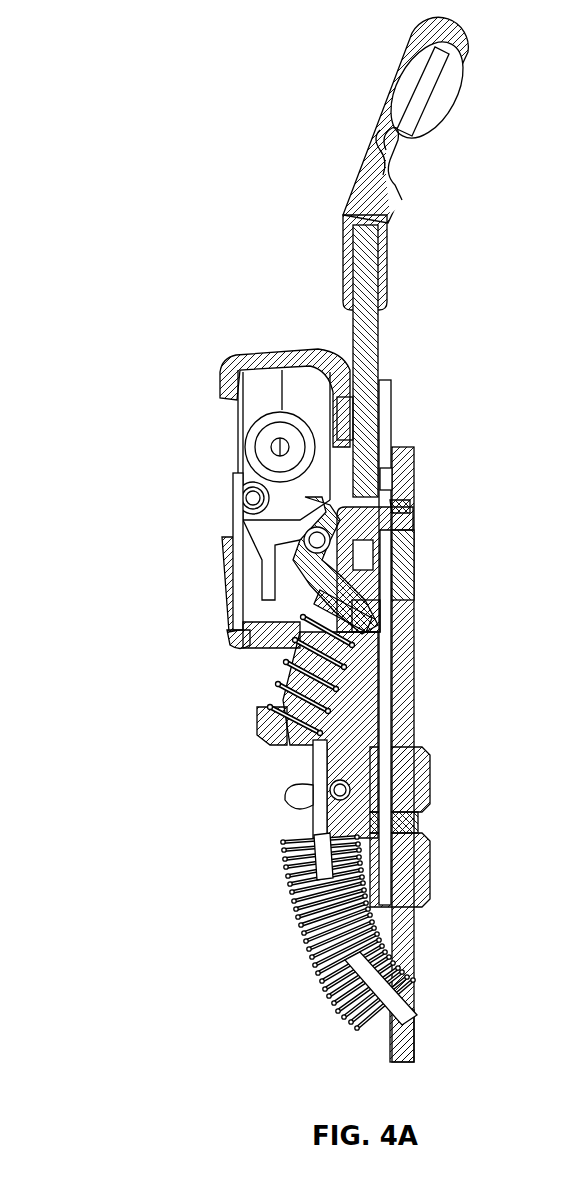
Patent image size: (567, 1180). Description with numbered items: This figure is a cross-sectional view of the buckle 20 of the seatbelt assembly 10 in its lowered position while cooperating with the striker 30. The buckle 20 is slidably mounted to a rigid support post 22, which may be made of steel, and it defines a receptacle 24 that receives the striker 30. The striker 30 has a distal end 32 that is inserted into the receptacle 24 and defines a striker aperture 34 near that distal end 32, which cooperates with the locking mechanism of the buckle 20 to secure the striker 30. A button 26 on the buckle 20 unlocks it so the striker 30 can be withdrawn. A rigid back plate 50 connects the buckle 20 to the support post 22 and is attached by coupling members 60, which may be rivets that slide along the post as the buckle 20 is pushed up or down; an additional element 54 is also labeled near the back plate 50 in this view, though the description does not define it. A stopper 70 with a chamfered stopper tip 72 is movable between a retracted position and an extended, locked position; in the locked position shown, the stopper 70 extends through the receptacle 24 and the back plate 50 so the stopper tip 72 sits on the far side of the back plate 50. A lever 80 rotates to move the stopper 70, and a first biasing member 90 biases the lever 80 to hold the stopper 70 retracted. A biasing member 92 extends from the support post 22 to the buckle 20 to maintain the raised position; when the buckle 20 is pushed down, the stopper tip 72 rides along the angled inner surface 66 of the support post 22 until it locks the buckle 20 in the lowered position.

The seatbelt assembly 10 is at (82, 38).
The buckle 20 is at (225, 366).
The support post 22 is at (415, 1040).
The receptacle 24 is at (345, 350).
The button 26 is at (236, 530).
The striker 30 is at (382, 130).
The distal end 32 is at (383, 627).
The striker aperture 34 is at (378, 470).
The back plate 50 is at (392, 398).
The sleeve 54 is at (415, 528).
The coupling members 60 is at (430, 848).
The inner surface 66 is at (392, 487).
The stopper 70 is at (393, 493).
The stopper tip 72 is at (407, 503).
The lever 80 is at (230, 630).
The first biasing member 90 is at (268, 695).
The biasing member 92 is at (292, 905).